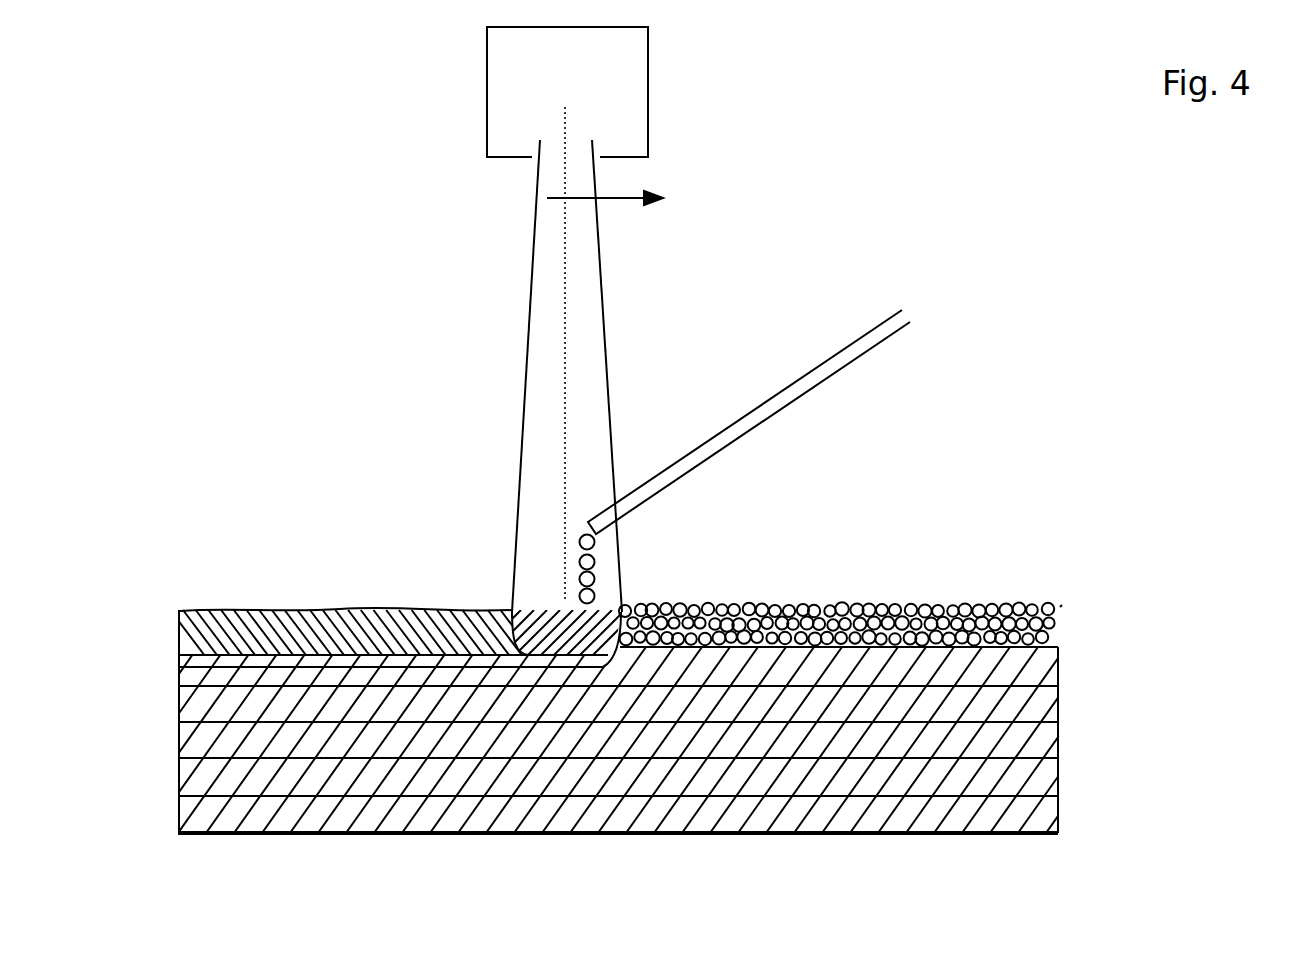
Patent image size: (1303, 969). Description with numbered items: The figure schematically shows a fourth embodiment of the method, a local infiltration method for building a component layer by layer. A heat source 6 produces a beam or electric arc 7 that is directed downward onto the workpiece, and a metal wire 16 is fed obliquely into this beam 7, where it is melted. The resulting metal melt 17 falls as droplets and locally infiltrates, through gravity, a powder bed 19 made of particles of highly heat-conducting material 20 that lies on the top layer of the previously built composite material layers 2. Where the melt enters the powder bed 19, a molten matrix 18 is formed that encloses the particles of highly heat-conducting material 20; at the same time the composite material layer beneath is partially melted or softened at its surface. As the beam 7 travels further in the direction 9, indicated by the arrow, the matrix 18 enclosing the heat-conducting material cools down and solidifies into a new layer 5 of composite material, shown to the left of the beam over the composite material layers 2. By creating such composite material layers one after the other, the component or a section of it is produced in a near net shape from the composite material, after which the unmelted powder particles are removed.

The composite material layers 2 is at (1056, 820).
The layer of composite material 5 is at (328, 617).
The heat source 6 is at (485, 57).
The beam or electric arc 7 is at (607, 403).
The direction 9 is at (618, 196).
The metal wire 16 is at (760, 420).
The metal melt 17 is at (596, 561).
The molten matrix 18 is at (538, 614).
The powder bed 19 is at (1071, 593).
The particles of highly heat-conducting material 20 is at (852, 626).